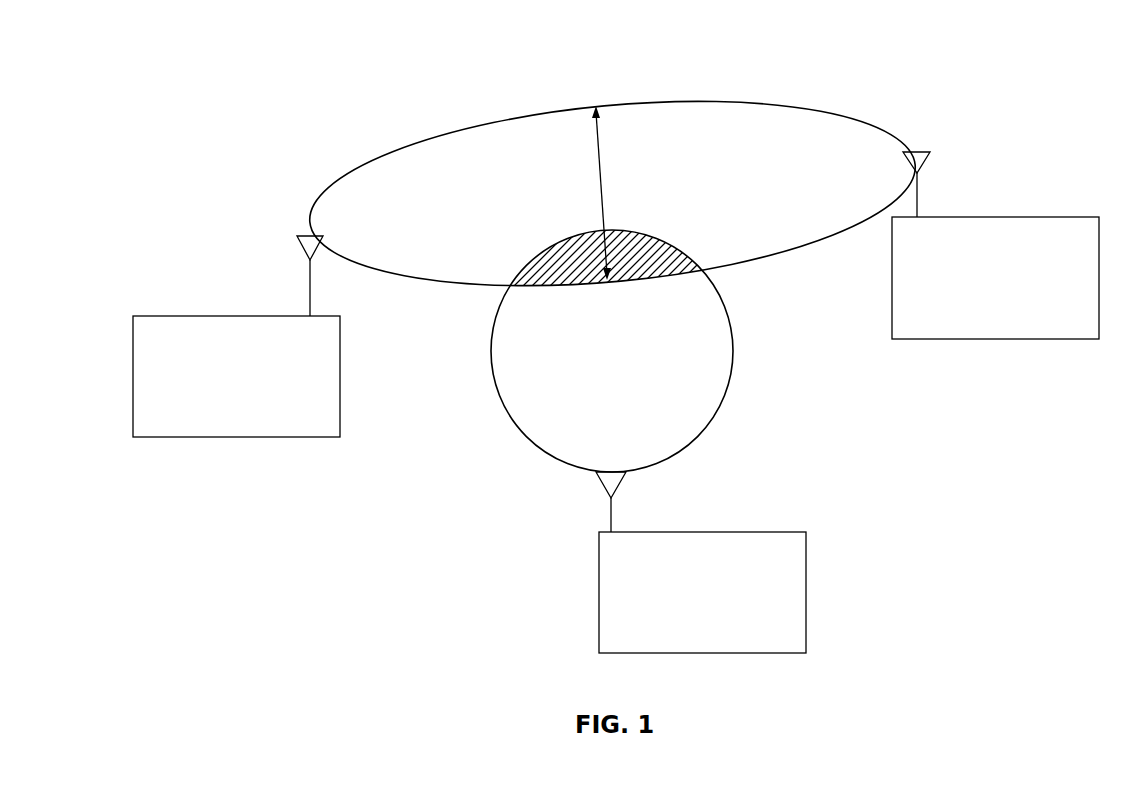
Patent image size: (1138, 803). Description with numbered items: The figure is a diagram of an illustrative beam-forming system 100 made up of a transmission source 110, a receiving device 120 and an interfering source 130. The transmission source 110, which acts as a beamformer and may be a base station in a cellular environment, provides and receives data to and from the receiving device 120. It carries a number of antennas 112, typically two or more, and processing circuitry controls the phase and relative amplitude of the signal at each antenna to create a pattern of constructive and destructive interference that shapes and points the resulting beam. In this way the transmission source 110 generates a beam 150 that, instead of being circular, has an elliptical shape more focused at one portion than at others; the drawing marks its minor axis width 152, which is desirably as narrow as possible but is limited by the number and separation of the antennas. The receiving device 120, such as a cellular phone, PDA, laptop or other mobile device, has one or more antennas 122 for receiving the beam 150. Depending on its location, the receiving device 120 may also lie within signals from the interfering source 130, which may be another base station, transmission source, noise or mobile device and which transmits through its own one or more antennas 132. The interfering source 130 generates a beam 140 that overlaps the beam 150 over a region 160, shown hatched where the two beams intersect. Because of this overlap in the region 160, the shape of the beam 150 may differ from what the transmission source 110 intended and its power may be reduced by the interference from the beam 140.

The beam-forming system 100 is at (175, 64).
The transmission source 110 is at (190, 316).
The antennas 112 is at (302, 236).
The receiving device 120 is at (1042, 217).
The antennas 122 is at (923, 152).
The interfering source 130 is at (747, 532).
The antennas 132 is at (600, 486).
The beam 140 is at (733, 362).
The beam 150 is at (487, 127).
The minor axis width 152 is at (630, 176).
The region 160 is at (700, 263).